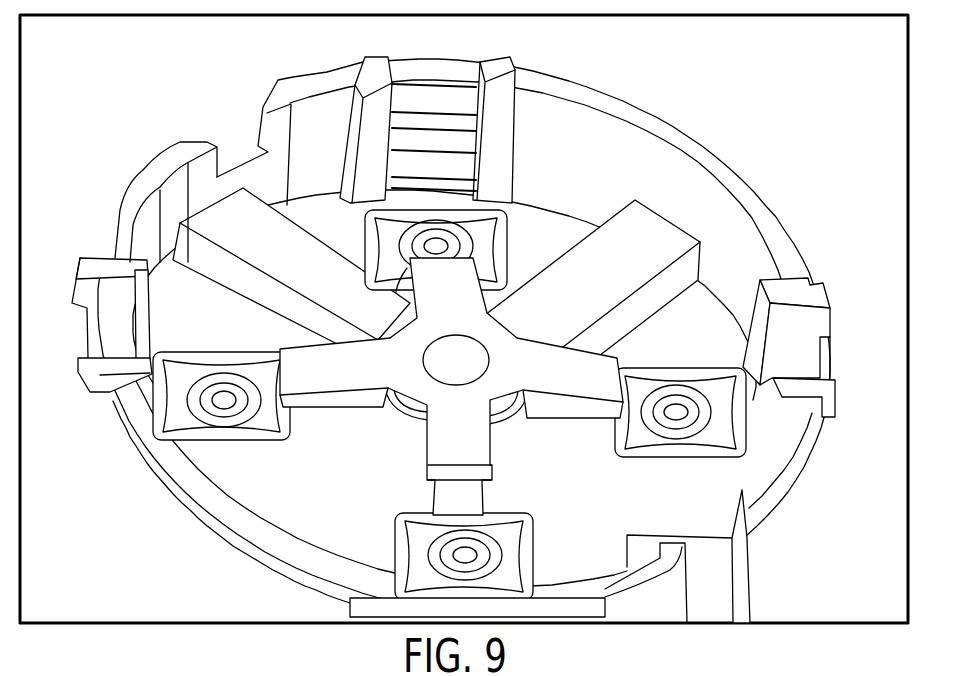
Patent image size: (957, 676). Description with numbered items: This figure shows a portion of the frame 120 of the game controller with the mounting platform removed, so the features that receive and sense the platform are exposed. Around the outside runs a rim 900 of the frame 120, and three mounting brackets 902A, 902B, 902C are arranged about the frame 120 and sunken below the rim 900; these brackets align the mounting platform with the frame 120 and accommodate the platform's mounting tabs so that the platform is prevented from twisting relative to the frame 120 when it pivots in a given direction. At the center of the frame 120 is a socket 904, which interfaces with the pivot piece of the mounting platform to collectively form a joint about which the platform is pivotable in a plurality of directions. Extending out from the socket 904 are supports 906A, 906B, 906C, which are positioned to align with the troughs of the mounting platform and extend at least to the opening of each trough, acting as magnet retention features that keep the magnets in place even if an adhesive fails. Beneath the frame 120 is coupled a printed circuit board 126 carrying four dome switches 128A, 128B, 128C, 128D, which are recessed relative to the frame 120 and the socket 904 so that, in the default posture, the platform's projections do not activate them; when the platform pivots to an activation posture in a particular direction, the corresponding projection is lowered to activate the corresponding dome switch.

The frame 120 is at (712, 90).
The printed circuit board 126 is at (372, 484).
The dome switch 128A is at (505, 290).
The dome switch 128B is at (690, 457).
The dome switch 128C is at (207, 440).
The dome switch 128D is at (397, 560).
The rim 900 is at (600, 107).
The mounting bracket 902A is at (417, 83).
The mounting bracket 902B is at (825, 358).
The mounting bracket 902C is at (110, 358).
The socket 904 is at (425, 348).
The support 906A is at (407, 281).
The support 906B is at (580, 407).
The support 906C is at (352, 393).